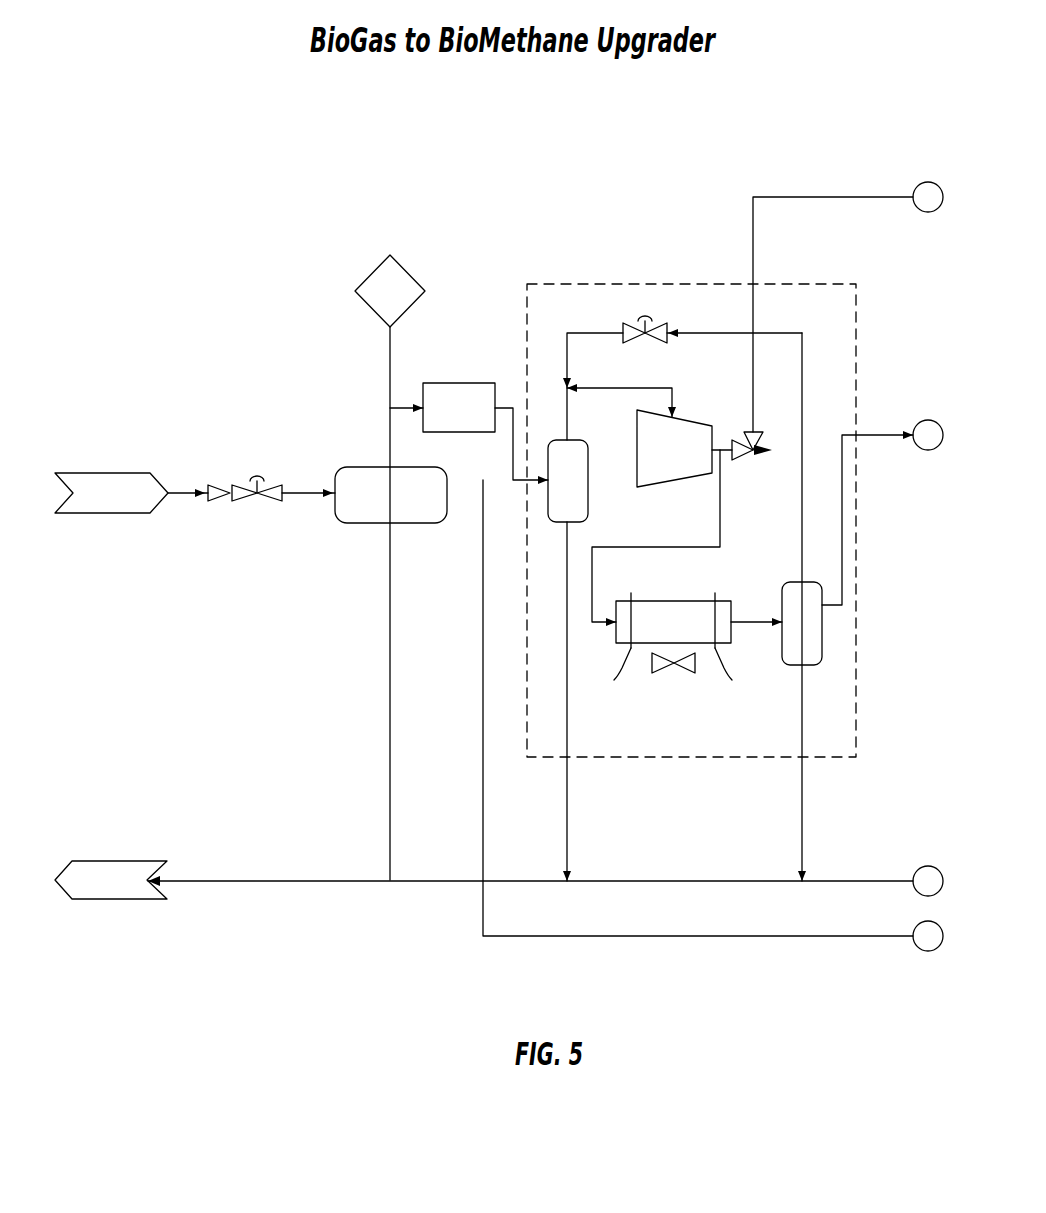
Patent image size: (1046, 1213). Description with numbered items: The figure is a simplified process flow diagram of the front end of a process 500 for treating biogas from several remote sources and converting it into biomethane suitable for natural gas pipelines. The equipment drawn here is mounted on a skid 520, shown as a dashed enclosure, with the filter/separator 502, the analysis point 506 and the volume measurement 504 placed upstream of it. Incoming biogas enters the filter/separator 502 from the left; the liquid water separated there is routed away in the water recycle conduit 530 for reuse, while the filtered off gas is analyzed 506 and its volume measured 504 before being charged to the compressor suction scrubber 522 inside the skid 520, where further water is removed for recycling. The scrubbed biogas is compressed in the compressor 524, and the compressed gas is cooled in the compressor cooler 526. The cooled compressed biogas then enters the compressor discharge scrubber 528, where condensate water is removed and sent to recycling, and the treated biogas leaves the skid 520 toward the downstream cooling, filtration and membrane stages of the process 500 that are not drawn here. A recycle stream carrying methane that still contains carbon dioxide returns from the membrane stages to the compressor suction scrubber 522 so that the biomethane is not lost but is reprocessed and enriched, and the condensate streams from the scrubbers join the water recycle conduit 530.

The process 500 is at (240, 166).
The filter/separator 502 is at (366, 467).
The volume measurement 504 is at (436, 383).
The gas analysis 506 is at (392, 253).
The skid 520 is at (846, 758).
The compressor suction scrubber 522 is at (568, 440).
The compressor 524 is at (680, 418).
The compressor cooler 526 is at (640, 600).
The compressor discharge scrubber 528 is at (798, 582).
The water recycle conduit 530 is at (747, 881).